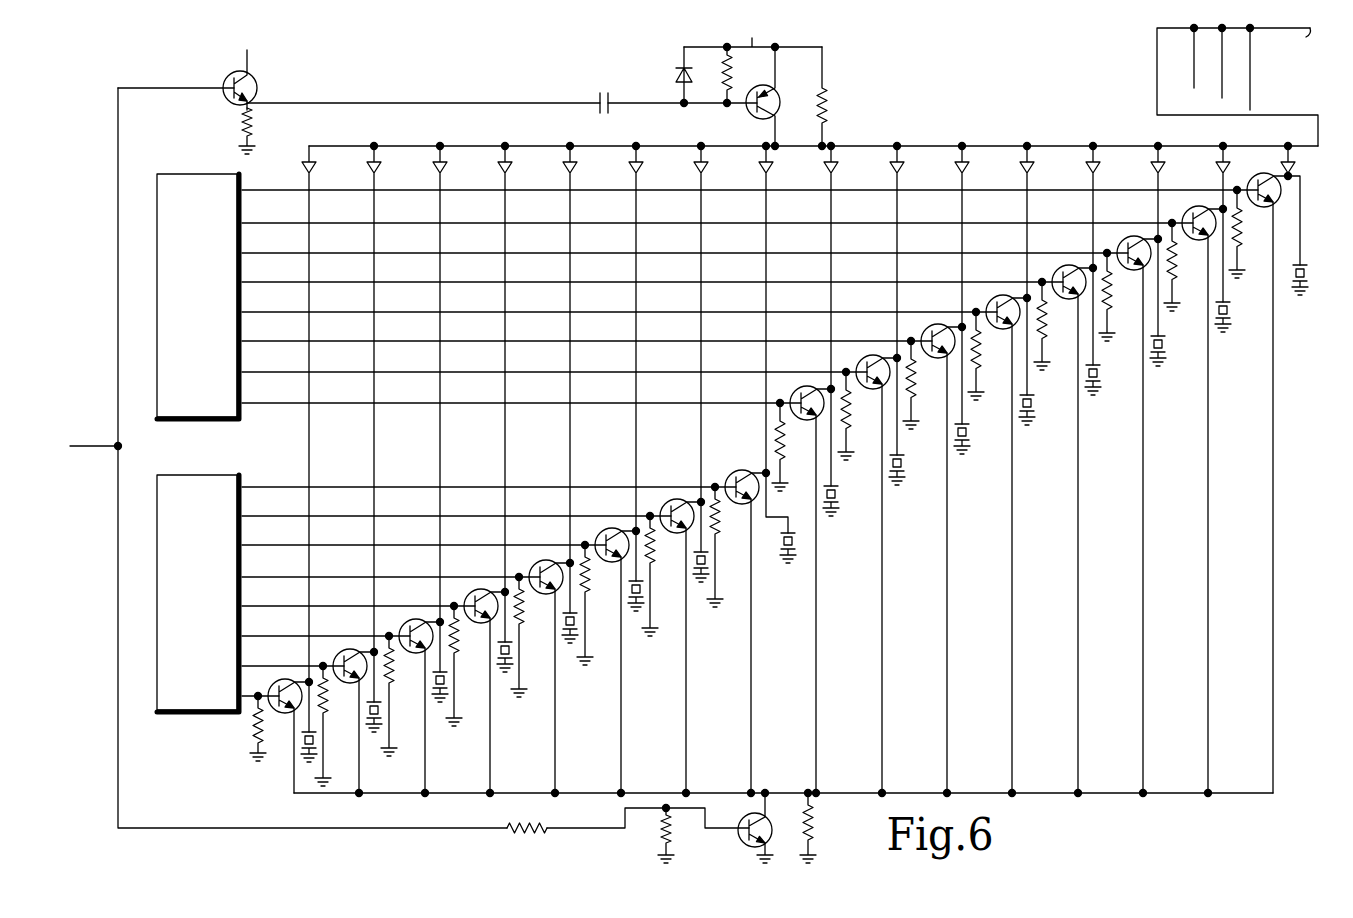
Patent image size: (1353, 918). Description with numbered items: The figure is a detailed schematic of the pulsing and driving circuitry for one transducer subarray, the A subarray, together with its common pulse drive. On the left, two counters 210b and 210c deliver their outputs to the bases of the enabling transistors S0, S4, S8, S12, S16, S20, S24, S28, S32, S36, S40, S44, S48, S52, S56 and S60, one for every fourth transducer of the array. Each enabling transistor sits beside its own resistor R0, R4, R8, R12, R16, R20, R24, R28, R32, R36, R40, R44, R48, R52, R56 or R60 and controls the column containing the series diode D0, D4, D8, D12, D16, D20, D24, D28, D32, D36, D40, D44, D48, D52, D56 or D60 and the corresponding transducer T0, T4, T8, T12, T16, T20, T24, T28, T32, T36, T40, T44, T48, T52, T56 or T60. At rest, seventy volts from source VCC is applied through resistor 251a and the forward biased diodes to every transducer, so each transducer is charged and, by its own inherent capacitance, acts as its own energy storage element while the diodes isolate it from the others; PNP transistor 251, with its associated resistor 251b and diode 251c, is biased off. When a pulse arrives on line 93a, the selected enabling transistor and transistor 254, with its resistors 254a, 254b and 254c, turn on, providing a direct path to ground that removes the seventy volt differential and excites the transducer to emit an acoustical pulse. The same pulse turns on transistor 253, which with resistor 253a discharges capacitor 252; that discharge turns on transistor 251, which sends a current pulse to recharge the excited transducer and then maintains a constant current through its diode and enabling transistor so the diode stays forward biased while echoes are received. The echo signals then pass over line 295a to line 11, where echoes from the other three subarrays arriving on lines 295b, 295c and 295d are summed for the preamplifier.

The counter 210b is at (198, 284).
The counter 210c is at (198, 581).
The input line 93a is at (94, 435).
The transistor 253 is at (257, 80).
The resistor 253a is at (253, 103).
The capacitor 252 is at (606, 95).
The PNP transistor 251 is at (777, 92).
The resistor 251a is at (832, 103).
The resistor 251b is at (715, 86).
The diode 251c is at (677, 72).
The transistor 254 is at (737, 842).
The resistor 254a is at (822, 852).
The resistor 254b is at (658, 850).
The resistor 254c is at (527, 842).
The line 295a is at (1226, 118).
The line 295b is at (1194, 55).
The line 295c is at (1222, 86).
The line 295d is at (1253, 75).
The line 11 is at (1307, 42).
The diode D0 is at (304, 172).
The diode D4 is at (369, 172).
The diode D8 is at (435, 172).
The diode D12 is at (500, 172).
The diode D16 is at (565, 172).
The diode D20 is at (631, 172).
The diode D24 is at (696, 172).
The diode D28 is at (761, 172).
The diode D32 is at (826, 172).
The diode D36 is at (892, 172).
The diode D40 is at (957, 172).
The diode D44 is at (1022, 172).
The diode D48 is at (1088, 172).
The diode D52 is at (1153, 172).
The diode D56 is at (1218, 172).
The diode D60 is at (1289, 158).
The enabling transistor S0 is at (275, 683).
The enabling transistor S4 is at (338, 654).
The enabling transistor S8 is at (404, 624).
The enabling transistor S12 is at (469, 594).
The enabling transistor S16 is at (534, 565).
The enabling transistor S20 is at (600, 533).
The enabling transistor S24 is at (666, 504).
The enabling transistor S28 is at (738, 471).
The enabling transistor S32 is at (795, 391).
The enabling transistor S36 is at (861, 360).
The enabling transistor S40 is at (926, 329).
The enabling transistor S44 is at (991, 300).
The enabling transistor S48 is at (1057, 270).
The enabling transistor S52 is at (1122, 241).
The enabling transistor S56 is at (1187, 211).
The enabling transistor S60 is at (1256, 178).
The resistor R0 is at (250, 734).
The resistor R4 is at (328, 690).
The resistor R8 is at (396, 688).
The resistor R12 is at (464, 690).
The resistor R16 is at (528, 640).
The resistor R20 is at (590, 610).
The resistor R24 is at (656, 590).
The resistor R28 is at (722, 560).
The resistor R32 is at (785, 450).
The resistor R36 is at (851, 420).
The resistor R40 is at (916, 390).
The resistor R44 is at (982, 360).
The resistor R48 is at (1047, 330).
The resistor R52 is at (1112, 300).
The resistor R56 is at (1180, 270).
The resistor R60 is at (1247, 250).
The transducer T0 is at (296, 756).
The transducer T4 is at (383, 726).
The transducer T8 is at (448, 705).
The transducer T12 is at (510, 678).
The transducer T16 is at (578, 648).
The transducer T20 is at (647, 612).
The transducer T24 is at (710, 585).
The transducer T28 is at (797, 560).
The transducer T32 is at (838, 500).
The transducer T36 is at (904, 470).
The transducer T40 is at (969, 438).
The transducer T44 is at (1034, 400).
The transducer T48 is at (1100, 372).
The transducer T52 is at (1165, 342).
The transducer T56 is at (1230, 308).
The transducer T60 is at (1308, 285).